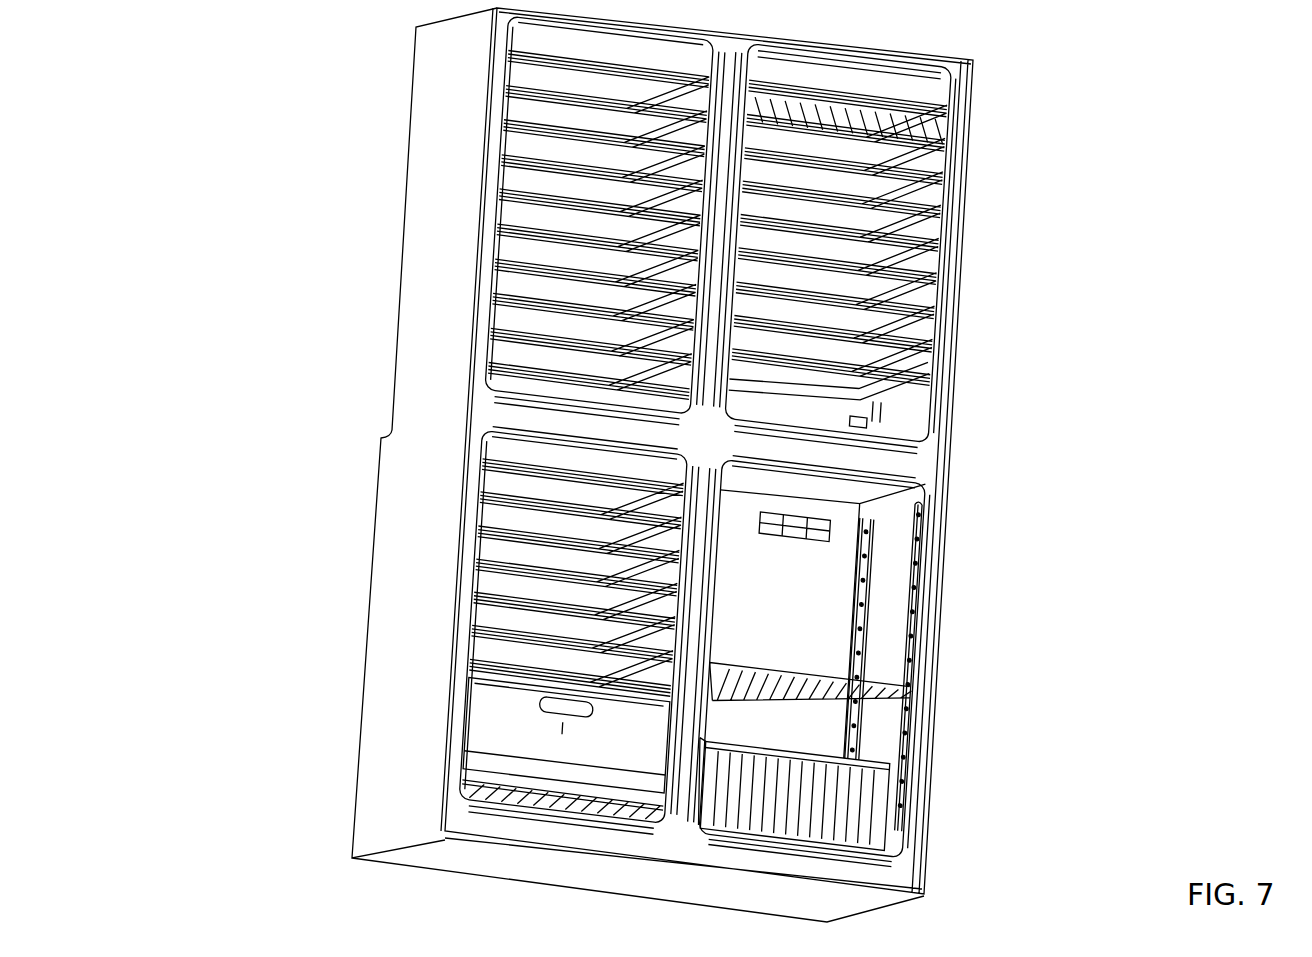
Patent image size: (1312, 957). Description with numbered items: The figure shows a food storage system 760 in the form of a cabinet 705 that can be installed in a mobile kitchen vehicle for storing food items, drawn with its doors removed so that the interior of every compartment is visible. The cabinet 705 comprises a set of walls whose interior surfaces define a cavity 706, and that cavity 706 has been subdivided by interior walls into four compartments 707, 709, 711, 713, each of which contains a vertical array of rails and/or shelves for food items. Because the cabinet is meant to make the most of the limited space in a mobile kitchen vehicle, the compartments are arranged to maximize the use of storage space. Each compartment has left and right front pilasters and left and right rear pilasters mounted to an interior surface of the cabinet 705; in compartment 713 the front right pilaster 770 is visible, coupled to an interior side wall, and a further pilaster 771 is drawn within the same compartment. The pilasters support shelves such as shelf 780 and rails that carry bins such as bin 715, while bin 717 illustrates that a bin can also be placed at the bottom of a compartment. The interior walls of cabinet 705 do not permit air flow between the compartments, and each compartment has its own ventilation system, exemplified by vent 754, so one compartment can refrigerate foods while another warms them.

The refrigerator appliance 760 is at (184, 74).
The cabinet 705 is at (427, 57).
The compartment 707 is at (522, 217).
The compartment 709 is at (477, 608).
The compartment 711 is at (917, 88).
The compartment 713 is at (916, 619).
The bin 715 is at (480, 722).
The bin 717 is at (873, 828).
The vent 754 is at (827, 520).
The cavity 706 is at (905, 498).
The front right pilaster 770 is at (915, 775).
The pilaster 771 is at (862, 617).
The shelf 780 is at (870, 705).